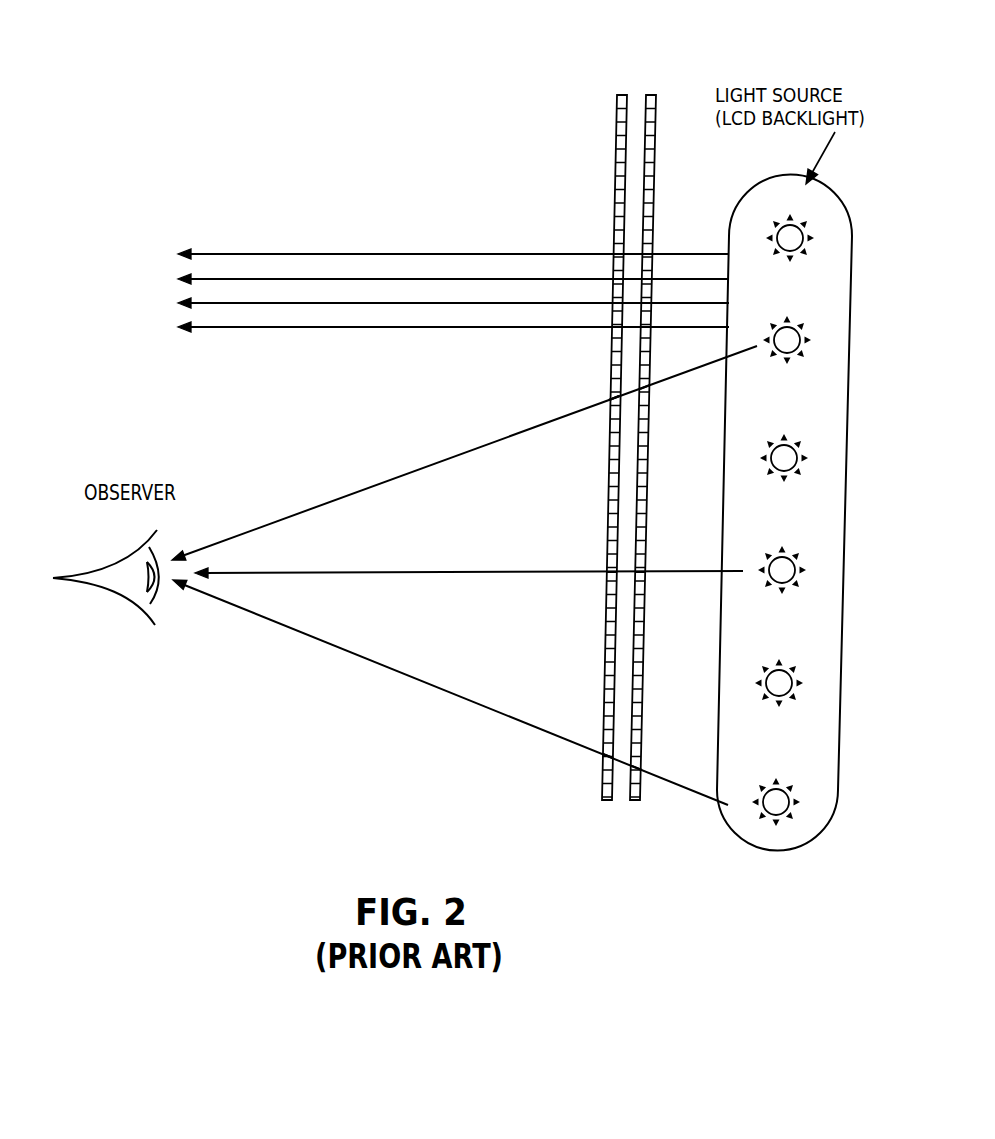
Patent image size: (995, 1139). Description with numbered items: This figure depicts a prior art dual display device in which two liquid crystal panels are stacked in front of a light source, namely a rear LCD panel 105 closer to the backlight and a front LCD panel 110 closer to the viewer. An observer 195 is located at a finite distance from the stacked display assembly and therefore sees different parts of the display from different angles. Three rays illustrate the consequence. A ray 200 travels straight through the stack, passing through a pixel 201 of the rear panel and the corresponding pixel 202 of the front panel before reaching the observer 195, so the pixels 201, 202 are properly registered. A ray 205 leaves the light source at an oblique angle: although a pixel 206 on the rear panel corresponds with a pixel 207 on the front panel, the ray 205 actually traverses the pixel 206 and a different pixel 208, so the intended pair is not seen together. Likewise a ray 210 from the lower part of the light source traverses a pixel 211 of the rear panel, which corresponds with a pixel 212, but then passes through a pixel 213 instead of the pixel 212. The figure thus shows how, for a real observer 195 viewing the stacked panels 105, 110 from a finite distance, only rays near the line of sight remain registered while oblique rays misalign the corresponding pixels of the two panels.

The rear LCD panel 105 is at (657, 90).
The front LCD panel 110 is at (613, 90).
The observer 195 is at (130, 585).
The ray 200 is at (452, 572).
The pixel 201 is at (647, 570).
The pixel 202 is at (607, 570).
The ray 205 is at (433, 462).
The pixel 206 is at (650, 388).
The pixel 207 is at (610, 398).
The pixel 208 is at (610, 405).
The ray 210 is at (435, 687).
The pixel 211 is at (633, 768).
The pixel 212 is at (600, 768).
The pixel 213 is at (600, 755).